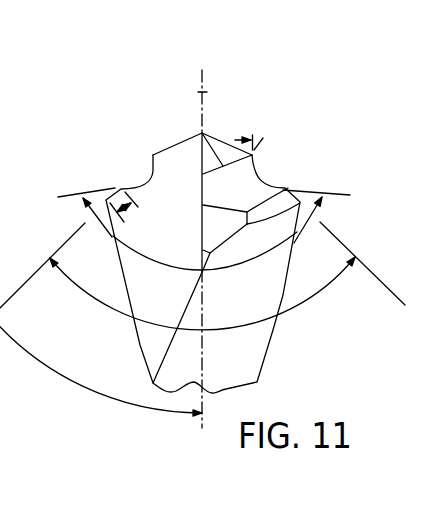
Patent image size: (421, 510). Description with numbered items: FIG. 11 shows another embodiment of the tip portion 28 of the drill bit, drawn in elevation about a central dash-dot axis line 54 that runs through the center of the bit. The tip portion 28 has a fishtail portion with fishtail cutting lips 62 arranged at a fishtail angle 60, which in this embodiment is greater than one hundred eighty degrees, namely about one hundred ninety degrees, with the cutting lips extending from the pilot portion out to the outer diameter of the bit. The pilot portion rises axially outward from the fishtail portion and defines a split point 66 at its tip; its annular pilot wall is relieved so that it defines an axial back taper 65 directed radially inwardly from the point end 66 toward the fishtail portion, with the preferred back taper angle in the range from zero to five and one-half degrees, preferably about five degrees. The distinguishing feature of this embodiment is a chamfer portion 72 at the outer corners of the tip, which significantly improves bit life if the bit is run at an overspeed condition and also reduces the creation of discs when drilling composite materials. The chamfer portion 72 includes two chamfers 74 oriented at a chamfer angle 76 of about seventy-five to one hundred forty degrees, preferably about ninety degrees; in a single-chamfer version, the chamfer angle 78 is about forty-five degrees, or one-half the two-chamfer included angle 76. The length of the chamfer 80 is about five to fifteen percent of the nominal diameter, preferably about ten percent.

The longitudinal axis 54 is at (205, 92).
The split point 66 is at (202, 133).
The tip portion 28 is at (255, 133).
The axial back taper 65 is at (261, 146).
The chamfer 74 is at (290, 193).
The chamfer portion 72 is at (115, 188).
The fishtail cutting lips 62 is at (132, 187).
The length of the chamfer 80 is at (132, 213).
The fishtail angle 60 is at (247, 262).
The chamfer angle 76 is at (317, 297).
The chamfer angle 78 is at (85, 385).